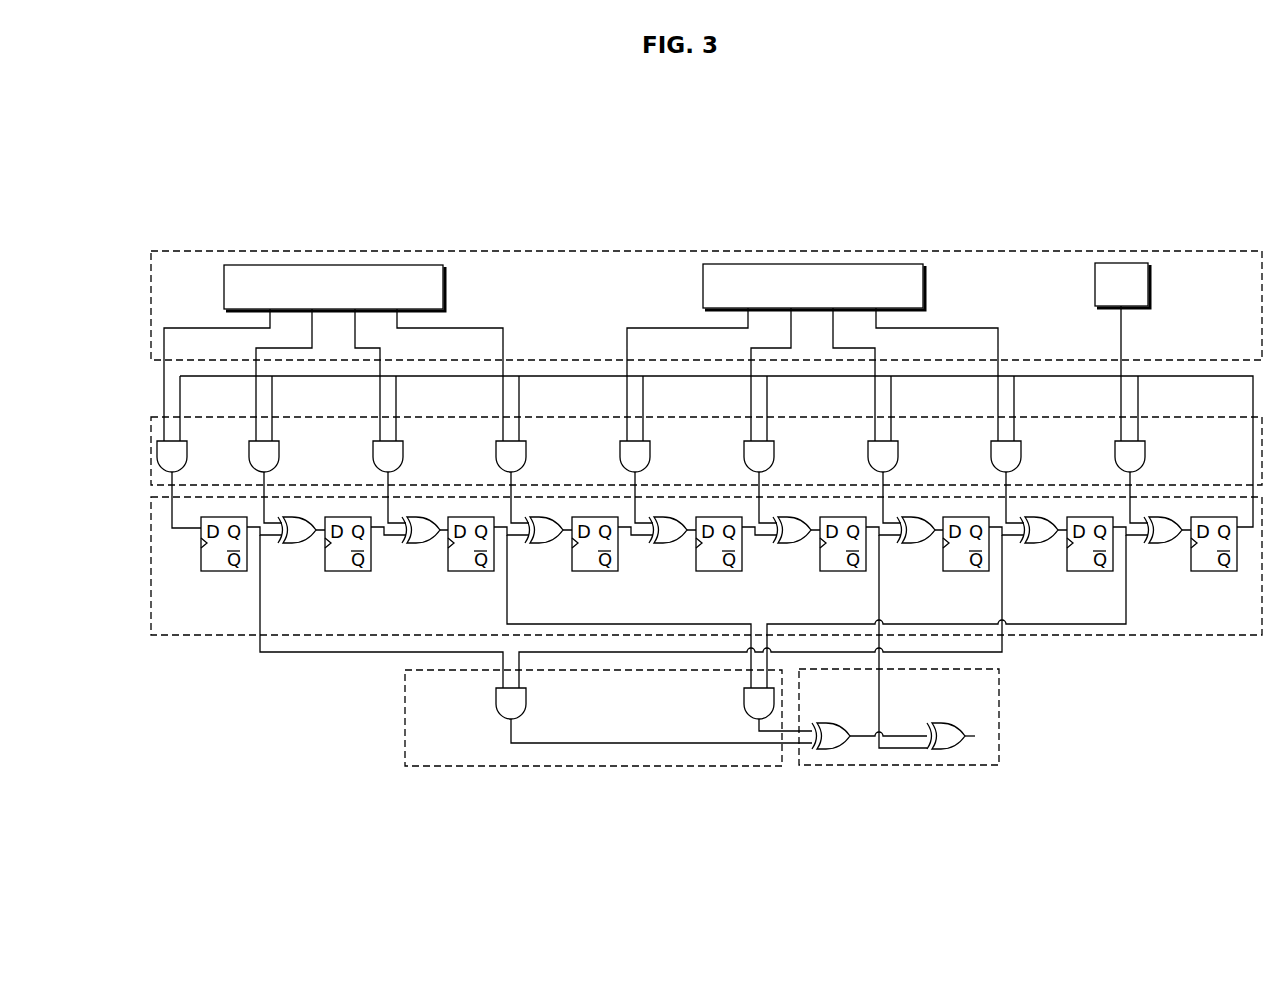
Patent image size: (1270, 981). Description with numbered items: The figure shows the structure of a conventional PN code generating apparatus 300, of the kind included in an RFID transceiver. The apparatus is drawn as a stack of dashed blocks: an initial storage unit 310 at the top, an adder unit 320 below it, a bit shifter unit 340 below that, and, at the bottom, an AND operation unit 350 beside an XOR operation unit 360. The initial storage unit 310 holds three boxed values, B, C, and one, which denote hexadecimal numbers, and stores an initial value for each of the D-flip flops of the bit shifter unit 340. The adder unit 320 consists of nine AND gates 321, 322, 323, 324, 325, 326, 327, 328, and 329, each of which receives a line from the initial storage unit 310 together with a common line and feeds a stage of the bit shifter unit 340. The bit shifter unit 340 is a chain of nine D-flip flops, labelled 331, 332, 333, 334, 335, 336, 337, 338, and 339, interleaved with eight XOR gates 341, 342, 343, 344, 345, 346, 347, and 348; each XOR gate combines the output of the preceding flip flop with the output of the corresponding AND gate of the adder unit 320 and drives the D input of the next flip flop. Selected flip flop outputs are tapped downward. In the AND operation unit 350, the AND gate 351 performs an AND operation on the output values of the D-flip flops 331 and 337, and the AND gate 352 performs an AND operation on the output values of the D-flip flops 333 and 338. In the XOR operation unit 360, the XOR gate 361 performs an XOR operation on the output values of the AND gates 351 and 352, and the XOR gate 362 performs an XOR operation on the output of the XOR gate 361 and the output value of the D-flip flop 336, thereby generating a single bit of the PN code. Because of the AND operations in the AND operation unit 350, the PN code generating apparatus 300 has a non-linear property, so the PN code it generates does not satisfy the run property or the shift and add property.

The PN code generating apparatus 300 is at (657, 189).
The initial storage unit 310 is at (151, 301).
The adder unit 320 is at (151, 446).
The AND gate 321 is at (187, 455).
The AND gate 322 is at (279, 455).
The AND gate 323 is at (403, 455).
The AND gate 324 is at (526, 455).
The AND gate 325 is at (650, 455).
The AND gate 326 is at (774, 455).
The AND gate 327 is at (898, 455).
The AND gate 328 is at (1021, 455).
The AND gate 329 is at (1145, 455).
The D-flip flop 331 is at (199, 560).
The D-flip flop 332 is at (323, 560).
The D-flip flop 333 is at (446, 560).
The D-flip flop 334 is at (570, 560).
The D-flip flop 335 is at (694, 560).
The D-flip flop 336 is at (818, 560).
The D-flip flop 337 is at (941, 560).
The D-flip flop 338 is at (1065, 560).
The D-flip flop 339 is at (1189, 560).
The bit shifter unit 340 is at (151, 558).
The XOR gate 341 is at (290, 544).
The XOR gate 342 is at (414, 544).
The XOR gate 343 is at (537, 544).
The XOR gate 344 is at (661, 544).
The XOR gate 345 is at (785, 544).
The XOR gate 346 is at (909, 544).
The XOR gate 347 is at (1032, 544).
The XOR gate 348 is at (1156, 544).
The AND operation unit 350 is at (405, 714).
The AND gate 351 is at (496, 697).
The AND gate 352 is at (744, 697).
The XOR operation unit 360 is at (1000, 712).
The XOR gate 361 is at (835, 723).
The XOR gate 362 is at (947, 723).